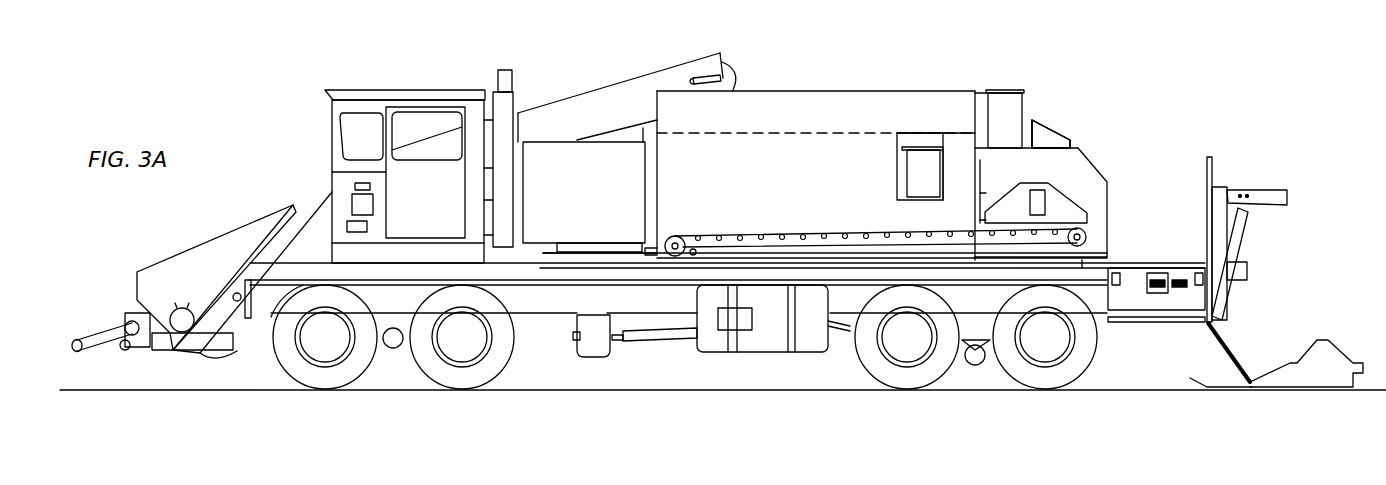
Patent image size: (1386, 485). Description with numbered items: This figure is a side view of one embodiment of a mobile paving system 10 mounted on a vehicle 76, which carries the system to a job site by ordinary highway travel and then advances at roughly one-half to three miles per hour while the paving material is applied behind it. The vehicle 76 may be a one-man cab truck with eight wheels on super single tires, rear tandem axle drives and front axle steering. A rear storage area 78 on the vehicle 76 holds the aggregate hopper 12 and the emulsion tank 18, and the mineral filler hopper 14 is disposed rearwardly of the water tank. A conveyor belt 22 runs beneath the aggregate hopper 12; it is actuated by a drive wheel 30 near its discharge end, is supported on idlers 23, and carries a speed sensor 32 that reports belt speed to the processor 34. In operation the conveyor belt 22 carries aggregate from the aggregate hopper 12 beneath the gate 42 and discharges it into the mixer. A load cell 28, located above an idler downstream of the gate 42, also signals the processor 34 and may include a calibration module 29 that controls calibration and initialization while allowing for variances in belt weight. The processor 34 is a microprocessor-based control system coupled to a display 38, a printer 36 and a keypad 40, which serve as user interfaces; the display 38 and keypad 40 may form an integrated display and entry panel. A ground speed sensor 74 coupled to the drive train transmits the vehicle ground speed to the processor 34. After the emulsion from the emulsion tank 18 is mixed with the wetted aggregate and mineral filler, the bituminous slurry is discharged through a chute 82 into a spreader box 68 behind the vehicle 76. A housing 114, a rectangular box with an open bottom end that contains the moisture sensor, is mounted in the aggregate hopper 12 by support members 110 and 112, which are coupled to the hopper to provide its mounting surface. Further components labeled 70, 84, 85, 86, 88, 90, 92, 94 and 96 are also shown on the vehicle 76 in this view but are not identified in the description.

The paving system 10 is at (1252, 58).
The aggregate hopper 12 is at (850, 125).
The mineral filler hopper 14 is at (998, 100).
The emulsion tank 18 is at (800, 171).
The conveyor belt 22 is at (794, 231).
The idlers 23 is at (867, 231).
The load cell 28 is at (1047, 197).
The calibration module 29 is at (1052, 130).
The display 38 is at (1094, 113).
The keypad 40 is at (1094, 113).
The drive wheel 30 is at (1088, 232).
The speed sensor 32 is at (675, 237).
The processor 34 is at (374, 200).
The printer 36 is at (367, 227).
The gate 42 is at (980, 181).
The spreader box 68 is at (1337, 380).
The transfer conveyor 70 is at (566, 86).
The ground speed sensor 74 is at (577, 340).
The vehicle 76 is at (378, 86).
The rear storage area 78 is at (852, 63).
The chute 82 is at (1217, 297).
The tow bar 84 is at (93, 333).
The mounting bracket 85 is at (236, 292).
The receiving hopper 86 is at (188, 252).
The roller 88 is at (178, 312).
The conveyor 90 is at (313, 222).
The discharge chute 92 is at (734, 62).
The engine compartment 94 is at (598, 206).
The gate 96 is at (1050, 183).
The support member 110 is at (973, 137).
The support member 112 is at (956, 153).
The housing 114 is at (908, 172).